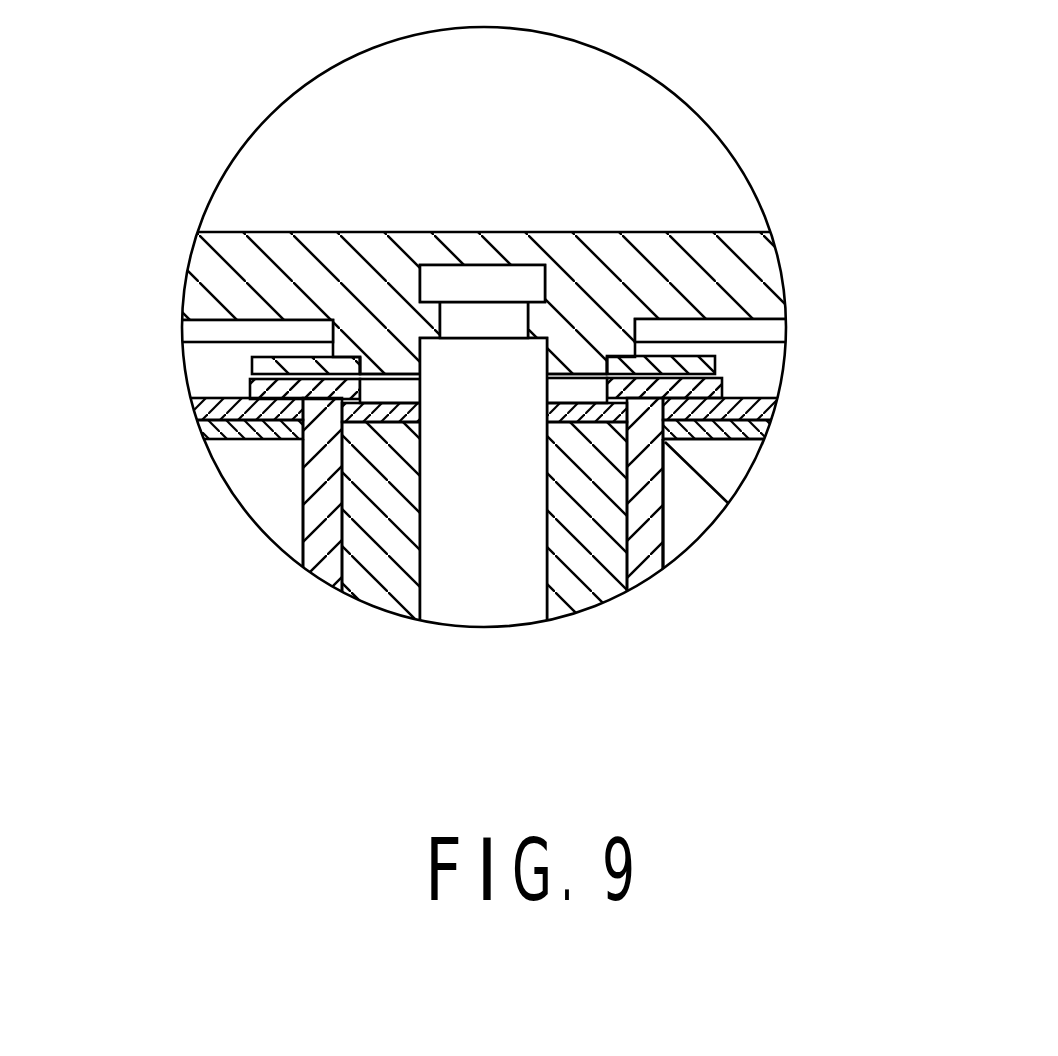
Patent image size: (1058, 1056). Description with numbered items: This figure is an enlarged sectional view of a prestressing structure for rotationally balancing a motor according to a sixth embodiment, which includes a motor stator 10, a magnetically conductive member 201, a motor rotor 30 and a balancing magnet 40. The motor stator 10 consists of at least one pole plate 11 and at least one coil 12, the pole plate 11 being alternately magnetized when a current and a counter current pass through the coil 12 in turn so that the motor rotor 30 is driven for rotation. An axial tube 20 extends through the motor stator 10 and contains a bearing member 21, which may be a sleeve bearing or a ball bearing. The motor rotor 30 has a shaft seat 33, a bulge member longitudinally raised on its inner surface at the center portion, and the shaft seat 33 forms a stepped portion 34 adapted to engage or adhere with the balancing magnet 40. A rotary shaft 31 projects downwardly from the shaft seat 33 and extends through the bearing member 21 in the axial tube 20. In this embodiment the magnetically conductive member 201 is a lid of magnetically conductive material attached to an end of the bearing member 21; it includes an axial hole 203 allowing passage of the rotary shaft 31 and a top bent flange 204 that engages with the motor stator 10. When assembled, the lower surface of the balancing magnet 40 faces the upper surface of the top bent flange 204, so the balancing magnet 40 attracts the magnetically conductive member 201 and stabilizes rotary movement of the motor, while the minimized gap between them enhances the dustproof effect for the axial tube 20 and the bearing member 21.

The motor stator 10 is at (795, 467).
The pole plate 11 is at (773, 412).
The coil 12 is at (683, 497).
The axial tube 20 is at (325, 552).
The magnetically conductive member 201 is at (303, 440).
The axial hole 203 is at (421, 417).
The top bent flange 204 is at (273, 393).
The bearing member 21 is at (395, 547).
The motor rotor 30 is at (676, 183).
The rotary shaft 31 is at (500, 375).
The shaft seat 33 is at (403, 337).
The stepped portion 34 is at (339, 354).
The balancing magnet 40 is at (288, 343).